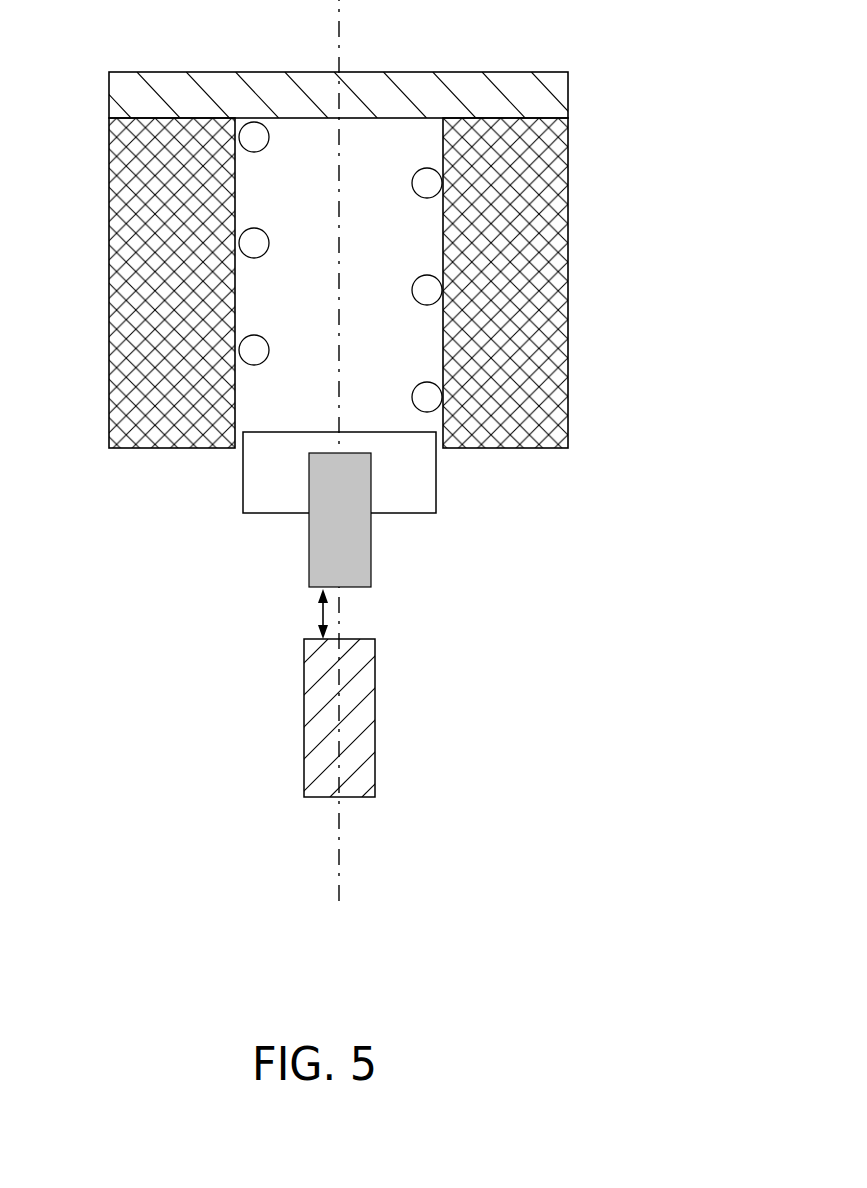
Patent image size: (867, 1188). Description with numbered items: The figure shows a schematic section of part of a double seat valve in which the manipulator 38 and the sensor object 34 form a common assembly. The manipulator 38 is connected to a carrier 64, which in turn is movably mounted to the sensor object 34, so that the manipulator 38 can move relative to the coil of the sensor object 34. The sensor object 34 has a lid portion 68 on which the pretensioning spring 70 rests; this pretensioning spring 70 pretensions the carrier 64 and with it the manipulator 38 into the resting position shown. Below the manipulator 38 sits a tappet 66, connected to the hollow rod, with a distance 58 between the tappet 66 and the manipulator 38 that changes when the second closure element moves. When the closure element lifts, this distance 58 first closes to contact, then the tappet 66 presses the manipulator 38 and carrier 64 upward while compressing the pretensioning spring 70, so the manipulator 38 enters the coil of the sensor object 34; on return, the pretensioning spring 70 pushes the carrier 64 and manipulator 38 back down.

The sensor object 34 is at (527, 317).
The manipulator 38 is at (358, 548).
The distance 58 is at (318, 612).
The carrier 64 is at (260, 488).
The tappet 66 is at (358, 720).
The lid portion 68 is at (523, 102).
The pretensioning spring 70 is at (247, 245).